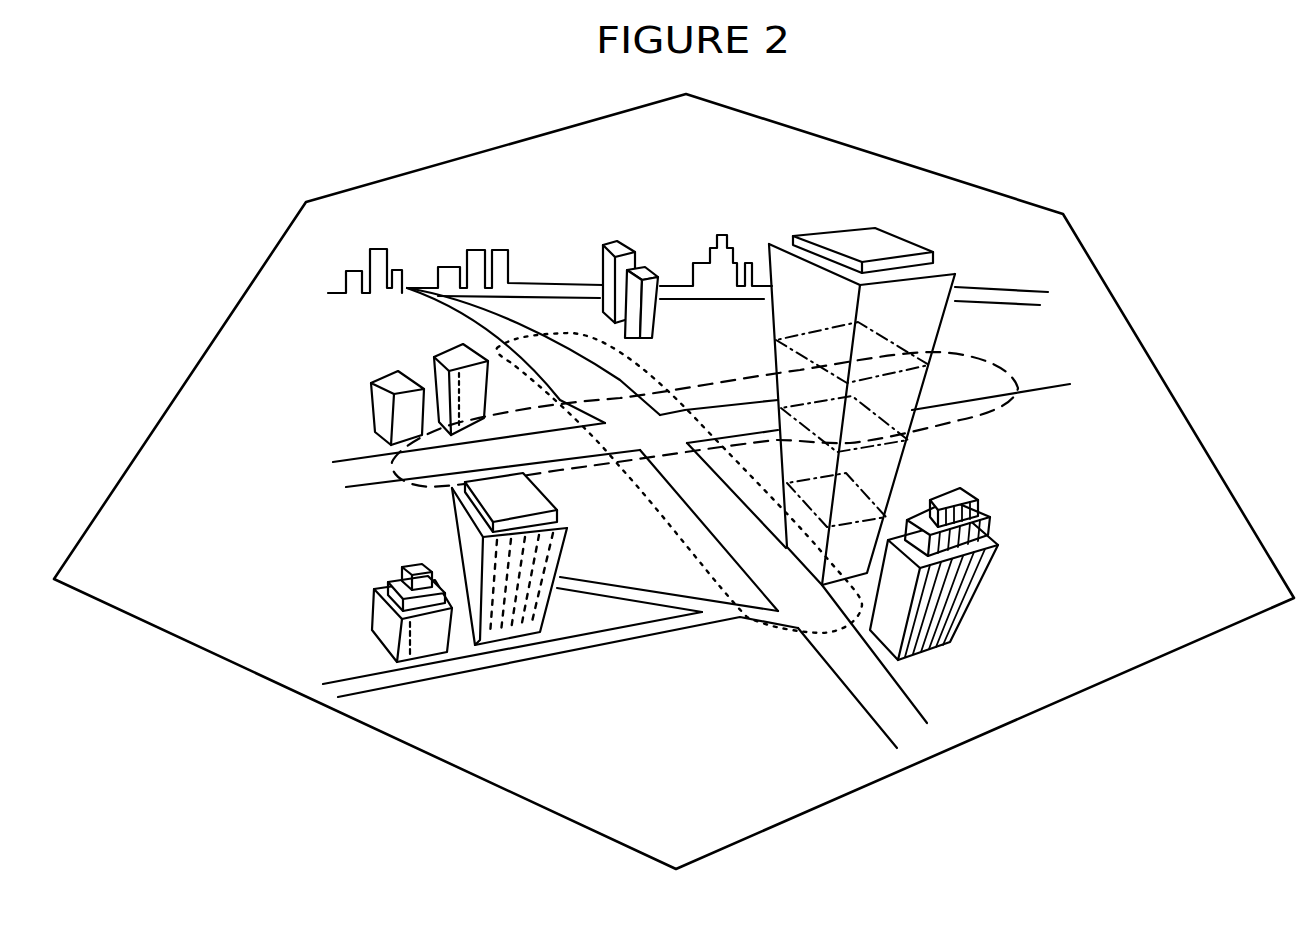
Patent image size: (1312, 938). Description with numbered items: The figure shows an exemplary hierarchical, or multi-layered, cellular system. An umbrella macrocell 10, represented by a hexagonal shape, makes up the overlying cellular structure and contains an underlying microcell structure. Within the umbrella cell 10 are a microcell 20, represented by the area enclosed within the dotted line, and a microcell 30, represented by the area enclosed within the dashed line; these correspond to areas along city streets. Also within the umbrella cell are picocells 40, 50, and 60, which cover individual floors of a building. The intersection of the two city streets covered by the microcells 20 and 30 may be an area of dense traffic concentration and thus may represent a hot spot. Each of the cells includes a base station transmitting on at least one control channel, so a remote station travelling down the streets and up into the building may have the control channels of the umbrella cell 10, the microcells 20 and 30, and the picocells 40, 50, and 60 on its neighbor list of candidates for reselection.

The umbrella macrocell 10 is at (443, 764).
The microcell 20 is at (557, 333).
The microcell 30 is at (335, 462).
The picocell 40 is at (937, 352).
The picocell 50 is at (905, 440).
The picocell 60 is at (834, 527).